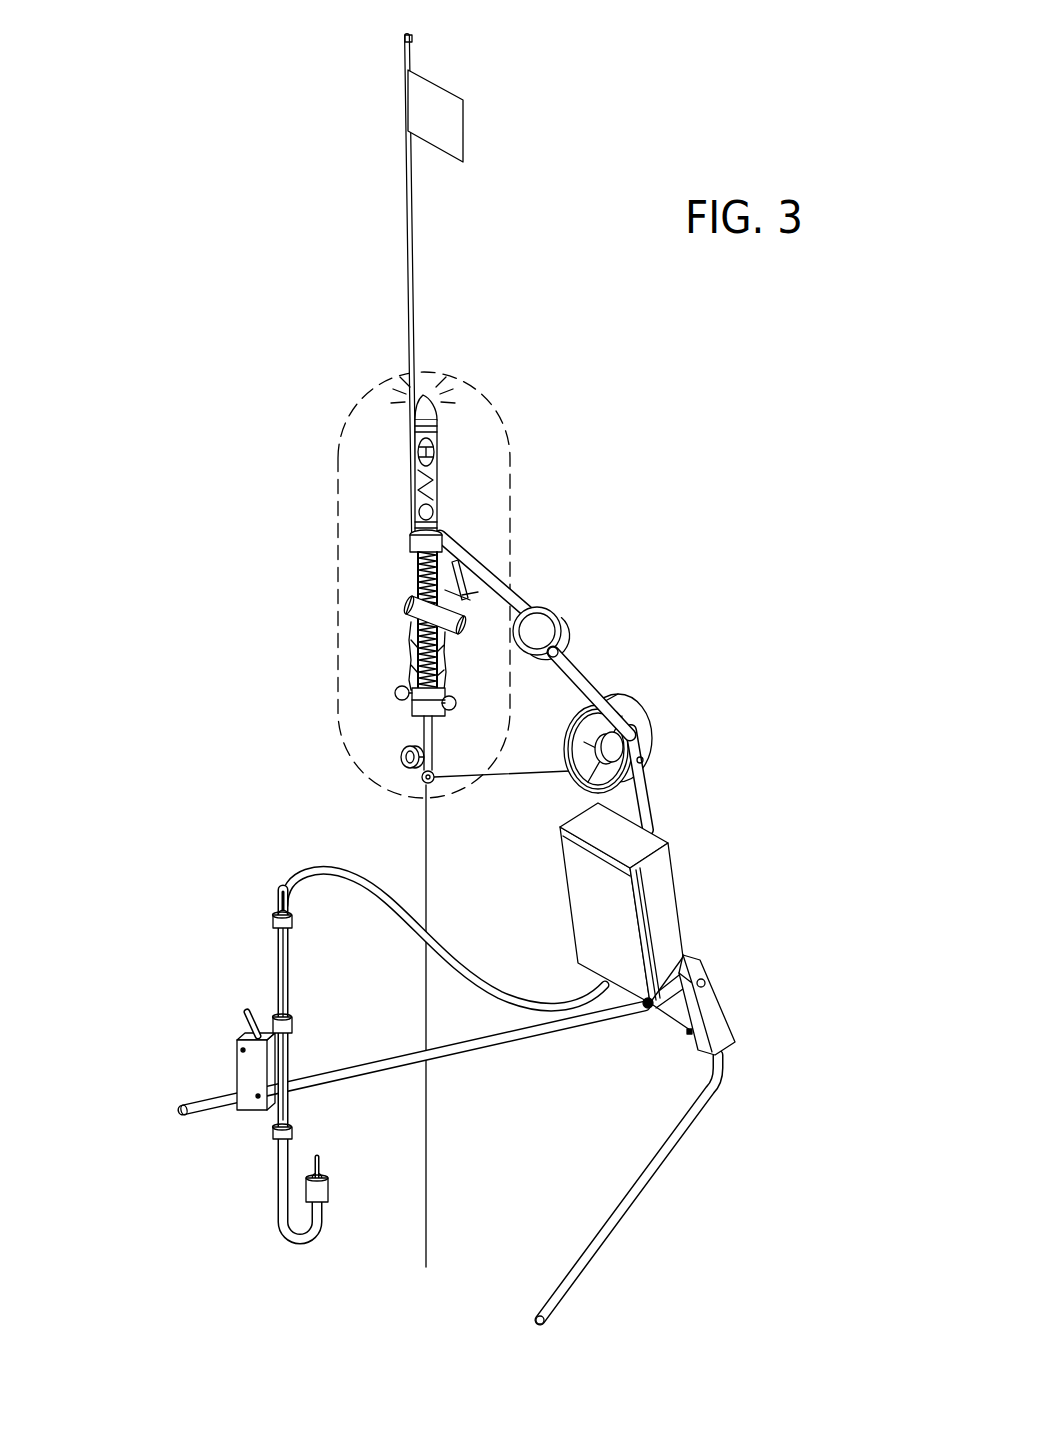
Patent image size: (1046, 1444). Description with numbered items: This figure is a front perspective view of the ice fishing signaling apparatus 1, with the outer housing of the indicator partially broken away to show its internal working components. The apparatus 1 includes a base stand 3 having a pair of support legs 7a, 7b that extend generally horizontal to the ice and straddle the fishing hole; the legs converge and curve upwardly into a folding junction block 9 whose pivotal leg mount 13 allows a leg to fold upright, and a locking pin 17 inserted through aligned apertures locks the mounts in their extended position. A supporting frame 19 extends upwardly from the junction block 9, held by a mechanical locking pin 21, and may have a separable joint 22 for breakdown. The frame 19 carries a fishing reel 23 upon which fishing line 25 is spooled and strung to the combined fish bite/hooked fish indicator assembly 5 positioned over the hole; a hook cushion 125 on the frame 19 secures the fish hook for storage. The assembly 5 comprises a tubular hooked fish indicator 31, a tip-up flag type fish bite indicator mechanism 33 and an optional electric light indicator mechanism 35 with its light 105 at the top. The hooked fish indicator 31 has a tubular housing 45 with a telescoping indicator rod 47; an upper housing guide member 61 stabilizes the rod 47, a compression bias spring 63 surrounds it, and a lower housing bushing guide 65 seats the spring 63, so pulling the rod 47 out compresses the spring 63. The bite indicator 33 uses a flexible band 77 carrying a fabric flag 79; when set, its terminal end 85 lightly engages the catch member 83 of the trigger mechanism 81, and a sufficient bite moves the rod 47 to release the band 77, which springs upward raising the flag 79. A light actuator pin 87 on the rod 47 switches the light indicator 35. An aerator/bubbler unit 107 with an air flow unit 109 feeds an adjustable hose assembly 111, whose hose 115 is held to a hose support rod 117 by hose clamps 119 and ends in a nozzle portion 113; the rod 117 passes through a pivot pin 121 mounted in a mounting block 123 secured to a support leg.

The ice fishing signaling apparatus 1 is at (203, 207).
The base stand 3 is at (780, 786).
The combined fish bite/hooked fish indicator assembly 5 is at (294, 460).
The support leg 7a is at (605, 1240).
The support leg 7b is at (200, 1108).
The folding junction block 9 is at (755, 993).
The left leg mount 13 is at (718, 1027).
The locking pin 17 is at (706, 986).
The supporting frame 19 is at (648, 800).
The mechanical locking pin 21 is at (713, 909).
The separable joint 22 is at (570, 658).
The fishing reel 23 is at (645, 722).
The fishing line 25 is at (428, 858).
The hooked fish indicator 31 is at (342, 681).
The fish bite indicator mechanism 33 is at (509, 104).
The electric light indicator mechanism 35 is at (503, 447).
The tubular housing 45 is at (412, 568).
The indicator rod 47 is at (424, 730).
The upper housing guide member 61 is at (414, 540).
The compression bias spring 63 is at (410, 612).
The lower housing bushing guide 65 is at (405, 708).
The flexible band 77 is at (416, 258).
The fabric flag 79 is at (435, 100).
The trigger mechanism 81 is at (394, 773).
The catch member 83 is at (403, 760).
The terminal end 85 is at (412, 38).
The light actuator pin 87 is at (438, 520).
The light 105 is at (432, 408).
The aerator/bubbler unit 107 is at (606, 905).
The air flow unit 109 is at (585, 872).
The adjustable hose assembly 111 is at (253, 1057).
The end nozzle portion 113 is at (318, 1198).
The hose 115 is at (410, 942).
The hose support rod 117 is at (281, 962).
The hose clamps 119 is at (292, 920).
The pivot pin 121 is at (250, 1012).
The mounting block 123 is at (240, 1062).
The hook cushion 125 is at (560, 612).